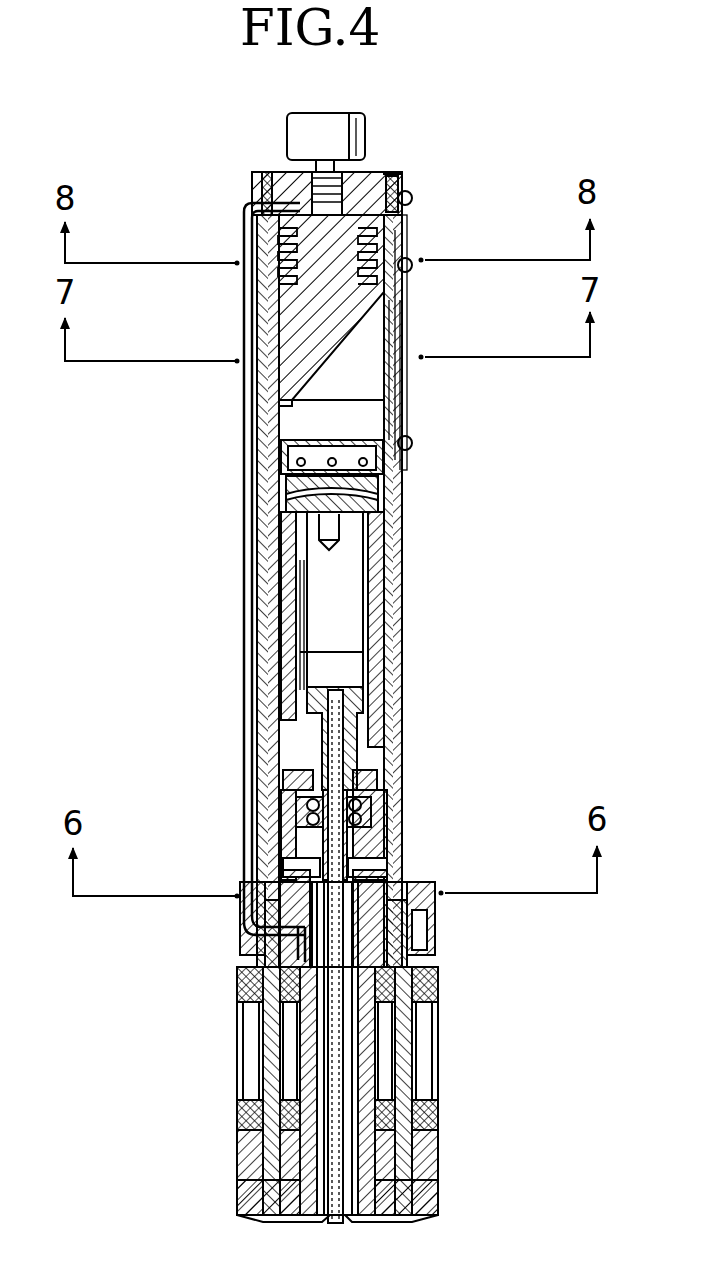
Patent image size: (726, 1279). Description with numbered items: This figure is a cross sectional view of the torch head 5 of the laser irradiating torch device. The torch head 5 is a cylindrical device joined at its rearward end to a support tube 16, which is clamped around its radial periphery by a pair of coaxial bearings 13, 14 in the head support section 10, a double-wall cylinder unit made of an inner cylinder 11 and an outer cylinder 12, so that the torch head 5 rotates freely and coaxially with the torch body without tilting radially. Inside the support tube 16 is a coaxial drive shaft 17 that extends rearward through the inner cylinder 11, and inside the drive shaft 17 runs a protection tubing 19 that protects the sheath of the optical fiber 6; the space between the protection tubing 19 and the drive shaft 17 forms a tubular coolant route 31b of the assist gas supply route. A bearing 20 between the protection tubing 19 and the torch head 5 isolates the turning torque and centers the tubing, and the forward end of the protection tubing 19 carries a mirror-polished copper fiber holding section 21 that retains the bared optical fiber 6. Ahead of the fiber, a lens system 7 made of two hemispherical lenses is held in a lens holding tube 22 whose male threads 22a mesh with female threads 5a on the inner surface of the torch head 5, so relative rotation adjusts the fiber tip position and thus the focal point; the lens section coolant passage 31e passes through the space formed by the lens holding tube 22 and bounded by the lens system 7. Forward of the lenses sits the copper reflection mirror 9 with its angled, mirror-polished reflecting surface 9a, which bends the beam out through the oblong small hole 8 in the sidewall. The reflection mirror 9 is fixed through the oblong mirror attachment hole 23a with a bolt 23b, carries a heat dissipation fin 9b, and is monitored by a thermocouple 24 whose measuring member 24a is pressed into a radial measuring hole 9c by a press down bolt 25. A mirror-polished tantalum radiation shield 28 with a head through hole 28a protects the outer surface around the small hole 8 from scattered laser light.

The torch head 5 is at (414, 570).
The female threads 5a is at (290, 772).
The optical fiber 6 is at (324, 848).
The lens system 7 is at (300, 516).
The small hole 8 is at (405, 302).
The reflection mirror 9 is at (270, 322).
The reflecting surface 9a is at (403, 330).
The heat dissipation fin 9b is at (275, 290).
The measuring hole 9c is at (246, 225).
The head support section 10 is at (240, 1022).
The inner cylinder 11 is at (298, 1140).
The outer cylinder 12 is at (244, 1155).
The bearing 13 is at (262, 1070).
The bearing 14 is at (258, 1092).
The support tube 16 is at (282, 1184).
The drive shaft 17 is at (300, 950).
The protection tubing 19 is at (305, 748).
The bearing 20 is at (282, 836).
The fiber holding section 21 is at (326, 722).
The lens holding tube 22 is at (298, 590).
The male threads 22a is at (300, 655).
The mirror attachment hole 23a is at (395, 180).
The bolt 23b is at (411, 197).
The thermocouple 24 is at (283, 455).
The measuring member 24a is at (262, 178).
The press down bolt 25 is at (286, 125).
The radiation shield 28 is at (408, 420).
The head through hole 28a is at (408, 365).
The tubular coolant route 31b is at (408, 855).
The lens section coolant passage 31e is at (396, 507).